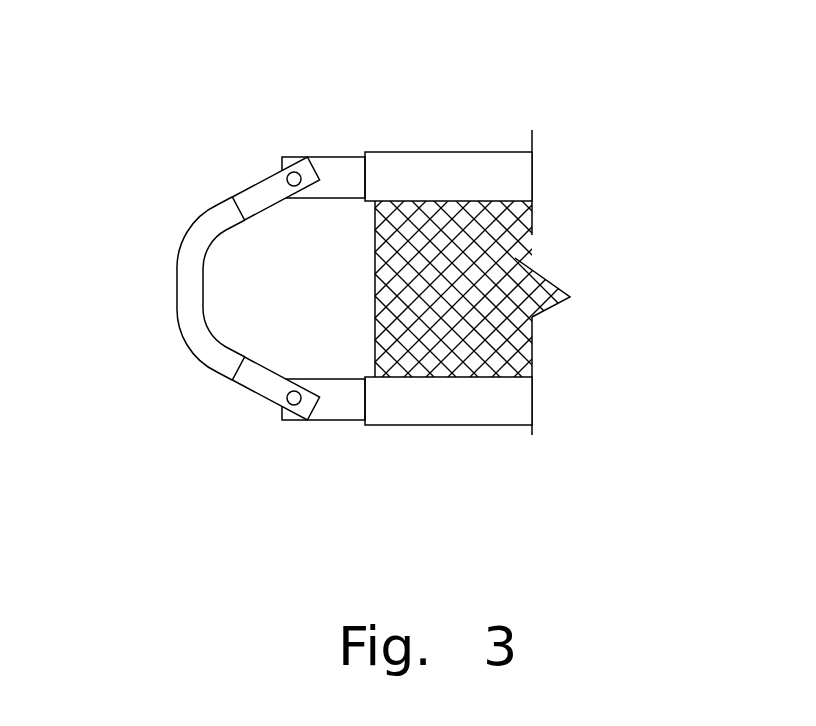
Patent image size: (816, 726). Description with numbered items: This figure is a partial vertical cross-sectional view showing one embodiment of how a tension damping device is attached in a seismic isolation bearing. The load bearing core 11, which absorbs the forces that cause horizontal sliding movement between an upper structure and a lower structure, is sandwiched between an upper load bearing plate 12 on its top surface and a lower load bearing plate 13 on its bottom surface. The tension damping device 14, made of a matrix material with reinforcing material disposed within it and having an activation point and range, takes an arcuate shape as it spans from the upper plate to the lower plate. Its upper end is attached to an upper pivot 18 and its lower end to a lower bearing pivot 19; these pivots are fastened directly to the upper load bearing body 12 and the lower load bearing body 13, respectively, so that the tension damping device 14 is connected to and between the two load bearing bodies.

The load bearing core 11 is at (543, 275).
The upper load bearing plate 12 is at (457, 152).
The lower load bearing plate 13 is at (452, 425).
The tension damping device 14 is at (187, 320).
The upper pivot 18 is at (347, 158).
The lower bearing pivot 19 is at (347, 422).